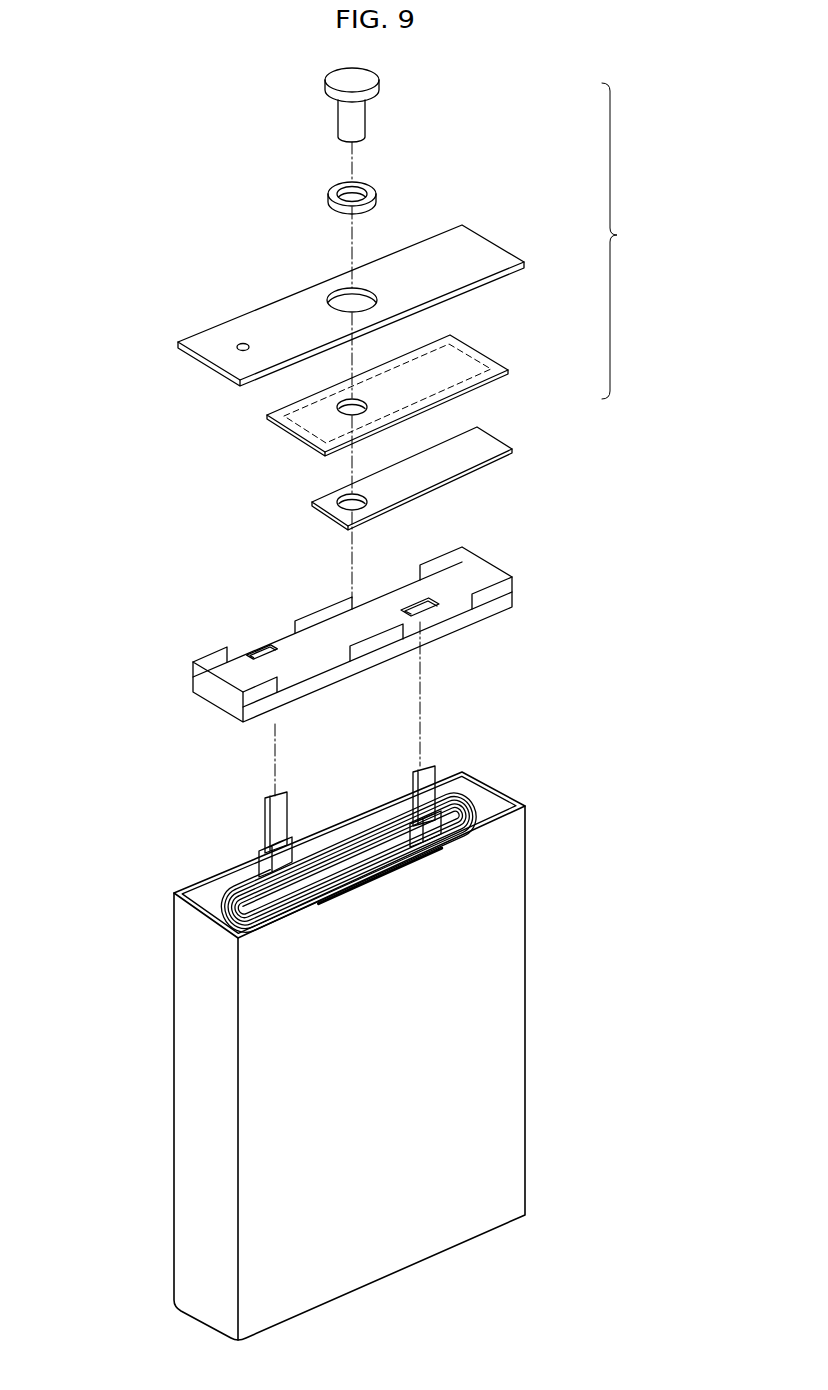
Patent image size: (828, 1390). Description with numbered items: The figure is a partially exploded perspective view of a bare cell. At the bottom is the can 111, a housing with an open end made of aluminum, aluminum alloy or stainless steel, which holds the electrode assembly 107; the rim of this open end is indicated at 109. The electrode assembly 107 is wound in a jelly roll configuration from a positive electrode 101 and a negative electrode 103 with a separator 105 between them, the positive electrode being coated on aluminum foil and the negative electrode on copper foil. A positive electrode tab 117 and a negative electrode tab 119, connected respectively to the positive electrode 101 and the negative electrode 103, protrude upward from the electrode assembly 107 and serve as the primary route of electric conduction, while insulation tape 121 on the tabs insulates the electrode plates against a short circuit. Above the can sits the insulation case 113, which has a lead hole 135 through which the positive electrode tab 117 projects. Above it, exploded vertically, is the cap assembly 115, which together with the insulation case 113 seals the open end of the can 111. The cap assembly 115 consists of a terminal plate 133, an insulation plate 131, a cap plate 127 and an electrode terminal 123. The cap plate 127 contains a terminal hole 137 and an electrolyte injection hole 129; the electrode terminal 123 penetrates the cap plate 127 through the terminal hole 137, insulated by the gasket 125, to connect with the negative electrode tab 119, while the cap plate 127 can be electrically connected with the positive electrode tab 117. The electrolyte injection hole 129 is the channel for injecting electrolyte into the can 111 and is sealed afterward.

The positive electrode 101 is at (453, 805).
The negative electrode 103 is at (348, 861).
The separator 105 is at (348, 861).
The electrode assembly 107 is at (384, 816).
The opening of can 109 is at (498, 806).
The can 111 is at (336, 1056).
The insulation case 113 is at (311, 634).
The cap assembly 115 is at (632, 241).
The positive electrode tab 117 is at (270, 815).
The negative electrode tab 119 is at (423, 788).
The insulation tape 121 is at (260, 858).
The electrode terminal 123 is at (367, 78).
The gasket 125 is at (333, 188).
The cap plate 127 is at (386, 295).
The electrolyte injection hole 129 is at (241, 342).
The insulation plate 131 is at (485, 354).
The terminal plate 133 is at (483, 438).
The lead hole 135 is at (258, 643).
The terminal hole 137 is at (333, 298).